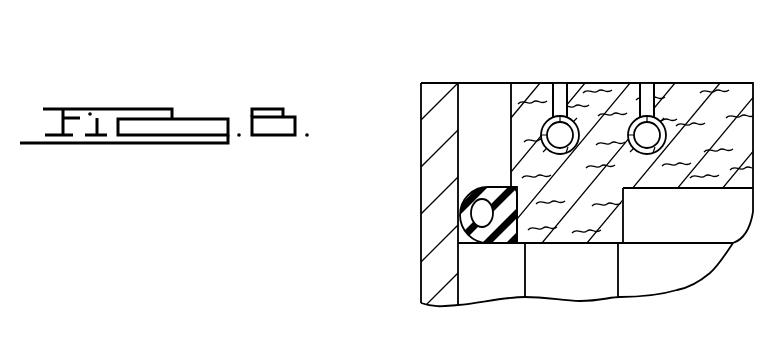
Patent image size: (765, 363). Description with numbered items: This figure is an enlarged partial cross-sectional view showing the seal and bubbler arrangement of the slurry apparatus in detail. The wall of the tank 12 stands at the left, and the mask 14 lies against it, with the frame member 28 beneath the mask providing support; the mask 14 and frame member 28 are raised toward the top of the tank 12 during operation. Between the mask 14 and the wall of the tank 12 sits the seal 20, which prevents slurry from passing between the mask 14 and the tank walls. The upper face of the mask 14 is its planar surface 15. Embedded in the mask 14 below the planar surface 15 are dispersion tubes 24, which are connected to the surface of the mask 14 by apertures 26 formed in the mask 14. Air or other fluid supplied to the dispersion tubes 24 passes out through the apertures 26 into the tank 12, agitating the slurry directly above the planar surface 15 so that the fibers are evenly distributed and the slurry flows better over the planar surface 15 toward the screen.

The tank 12 is at (430, 112).
The mask 14 is at (523, 85).
The planar surface 15 is at (700, 83).
The seal 20 is at (460, 210).
The dispersion tubes 24 is at (577, 149).
The apertures 26 is at (645, 85).
The frame member 28 is at (578, 286).